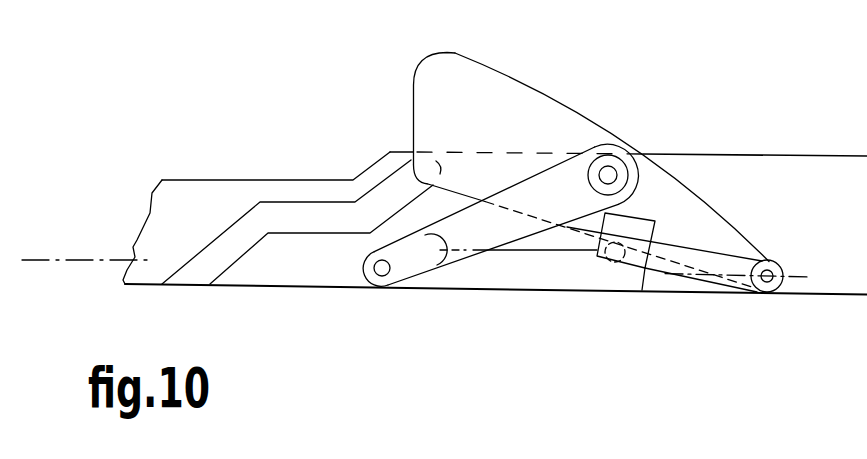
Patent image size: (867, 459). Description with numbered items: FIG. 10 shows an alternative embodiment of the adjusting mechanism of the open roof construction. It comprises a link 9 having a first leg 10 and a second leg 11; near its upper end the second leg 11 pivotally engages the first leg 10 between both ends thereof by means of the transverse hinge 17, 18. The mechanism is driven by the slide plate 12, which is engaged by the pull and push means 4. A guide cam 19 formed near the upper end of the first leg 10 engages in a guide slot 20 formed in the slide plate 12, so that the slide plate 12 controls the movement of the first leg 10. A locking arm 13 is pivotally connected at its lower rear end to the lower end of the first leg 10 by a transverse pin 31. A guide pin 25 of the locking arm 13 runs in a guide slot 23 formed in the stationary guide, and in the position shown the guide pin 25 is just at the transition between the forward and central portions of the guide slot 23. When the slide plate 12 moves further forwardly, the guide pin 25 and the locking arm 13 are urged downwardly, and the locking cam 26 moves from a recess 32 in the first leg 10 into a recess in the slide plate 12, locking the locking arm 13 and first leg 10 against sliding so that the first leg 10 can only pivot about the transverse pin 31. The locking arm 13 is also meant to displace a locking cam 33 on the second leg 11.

The pull-and-push means 4 is at (38, 262).
The link 9 is at (577, 97).
The first leg 10 is at (520, 110).
The second leg 11 is at (462, 235).
The slide plate 12 is at (777, 167).
The locking arm 13 is at (703, 255).
The transverse hinge 17 is at (608, 175).
The transverse hinge 18 is at (608, 175).
The guide cam 19 is at (450, 185).
The guide slot 20 is at (307, 212).
The guide slot 23 is at (531, 252).
The guide pin 25 is at (600, 263).
The locking cam 26 is at (640, 258).
The transverse pin 31 is at (766, 282).
The recess 32 is at (646, 217).
The locking cam 33 is at (408, 260).